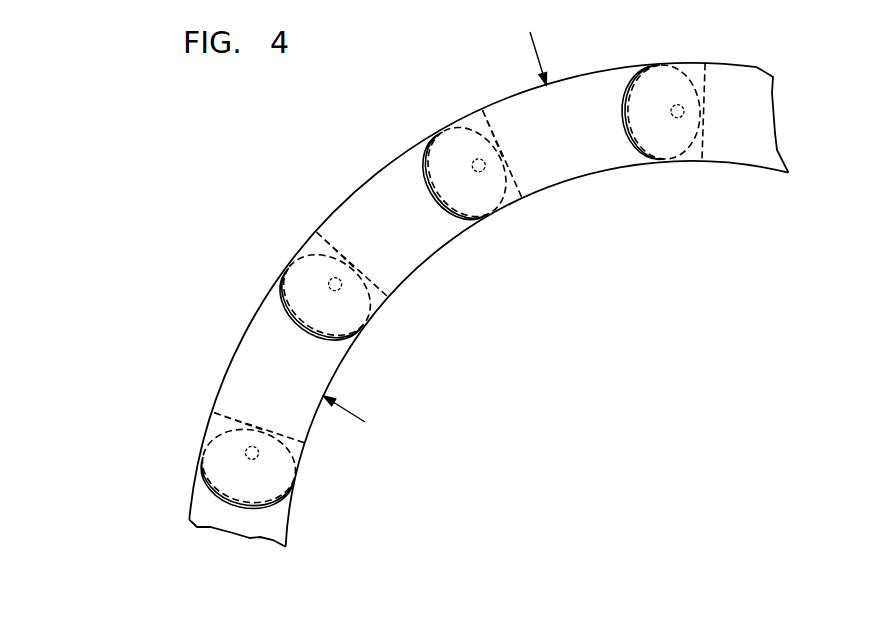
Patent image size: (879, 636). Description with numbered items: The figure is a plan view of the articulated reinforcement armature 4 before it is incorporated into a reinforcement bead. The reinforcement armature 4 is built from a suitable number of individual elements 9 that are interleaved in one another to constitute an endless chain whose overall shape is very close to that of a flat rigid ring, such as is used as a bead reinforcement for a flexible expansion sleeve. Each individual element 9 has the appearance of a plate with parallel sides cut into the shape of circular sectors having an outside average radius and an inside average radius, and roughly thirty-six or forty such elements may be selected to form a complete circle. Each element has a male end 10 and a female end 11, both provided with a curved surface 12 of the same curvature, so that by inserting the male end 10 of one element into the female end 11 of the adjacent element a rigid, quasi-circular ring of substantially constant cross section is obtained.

The reinforcement armature 4 is at (263, 210).
The individual element 9 is at (422, 238).
The male end 10 is at (503, 193).
The female end 11 is at (285, 269).
The curved surface 12 is at (209, 491).